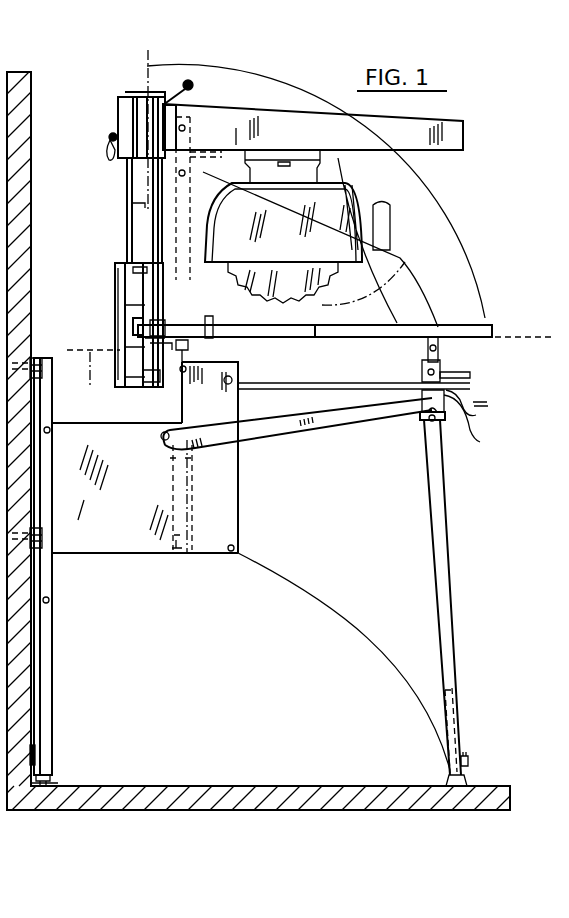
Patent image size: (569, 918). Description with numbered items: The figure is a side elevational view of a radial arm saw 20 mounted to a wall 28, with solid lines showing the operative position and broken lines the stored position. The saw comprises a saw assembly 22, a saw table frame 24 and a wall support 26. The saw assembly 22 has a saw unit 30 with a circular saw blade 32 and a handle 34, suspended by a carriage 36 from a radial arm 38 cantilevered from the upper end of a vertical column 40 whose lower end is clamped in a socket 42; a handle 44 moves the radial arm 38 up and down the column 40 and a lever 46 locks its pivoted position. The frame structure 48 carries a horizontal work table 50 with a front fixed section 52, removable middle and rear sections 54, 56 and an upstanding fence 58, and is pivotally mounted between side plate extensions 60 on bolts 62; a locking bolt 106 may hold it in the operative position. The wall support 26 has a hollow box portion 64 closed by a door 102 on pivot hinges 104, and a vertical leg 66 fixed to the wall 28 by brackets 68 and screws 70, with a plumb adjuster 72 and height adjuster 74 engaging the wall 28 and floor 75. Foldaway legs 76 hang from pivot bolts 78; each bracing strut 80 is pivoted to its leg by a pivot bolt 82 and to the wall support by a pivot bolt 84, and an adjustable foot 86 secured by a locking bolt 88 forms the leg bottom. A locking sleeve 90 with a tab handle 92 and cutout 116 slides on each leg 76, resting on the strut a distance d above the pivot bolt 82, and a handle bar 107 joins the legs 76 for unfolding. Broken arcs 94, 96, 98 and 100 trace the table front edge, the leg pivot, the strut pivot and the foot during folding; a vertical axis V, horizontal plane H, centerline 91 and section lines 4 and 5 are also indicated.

The radial arm saw 20 is at (500, 460).
The saw assembly 22 is at (452, 177).
The saw table frame 24 is at (452, 346).
The wall support 26 is at (142, 568).
The wall 28 is at (38, 233).
The saw unit 30 is at (370, 200).
The circular saw blade 32 is at (300, 285).
The handle 34 is at (403, 230).
The carriage 36 is at (340, 160).
The radial arm 38 is at (427, 132).
The vertical column 40 is at (132, 214).
The socket 42 is at (117, 288).
The handle 44 is at (200, 95).
The lever 46 is at (108, 152).
The frame structure 48 is at (352, 380).
The horizontal work table 50 is at (485, 320).
The front fixed section 52 is at (138, 82).
The removable middle section 54 is at (292, 325).
The removable rear section 56 is at (199, 323).
The fence 58 is at (213, 320).
The side plate extension 60 is at (217, 410).
The bolt 62 is at (187, 364).
The hollow box portion 64 is at (183, 535).
The vertical leg 66 is at (53, 628).
The bracket 68 is at (36, 365).
The screw 70 is at (53, 358).
The plumb adjuster 72 is at (35, 745).
The height adjuster 74 is at (50, 783).
The floor 75 is at (222, 785).
The foldaway leg 76 is at (175, 480).
The pivot bolt 78 is at (422, 370).
The bracing strut 80 is at (353, 423).
The pivot bolt 82 is at (425, 425).
The pivot bolt 84 is at (164, 430).
The adjustable foot 86 is at (468, 785).
The locking bolt 88 is at (465, 758).
The locking sleeve 90 is at (118, 121).
The centerline 91 is at (93, 382).
The tab handle 92 is at (447, 405).
The circular arc 94 is at (460, 232).
The circular arc 96 is at (423, 302).
The circular arc 98 is at (363, 283).
The arc 100 is at (318, 598).
The door 102 is at (228, 498).
The pivot hinge 104 is at (236, 549).
The locking bolt 106 is at (228, 393).
The handle bar 107 is at (473, 410).
The cutout 116 is at (440, 405).
The vertical axis V is at (148, 62).
The horizontal plane H is at (513, 338).
The distance d is at (497, 403).
The section line 4- 4 is at (388, 362).
The section line 5- 5 is at (167, 147).